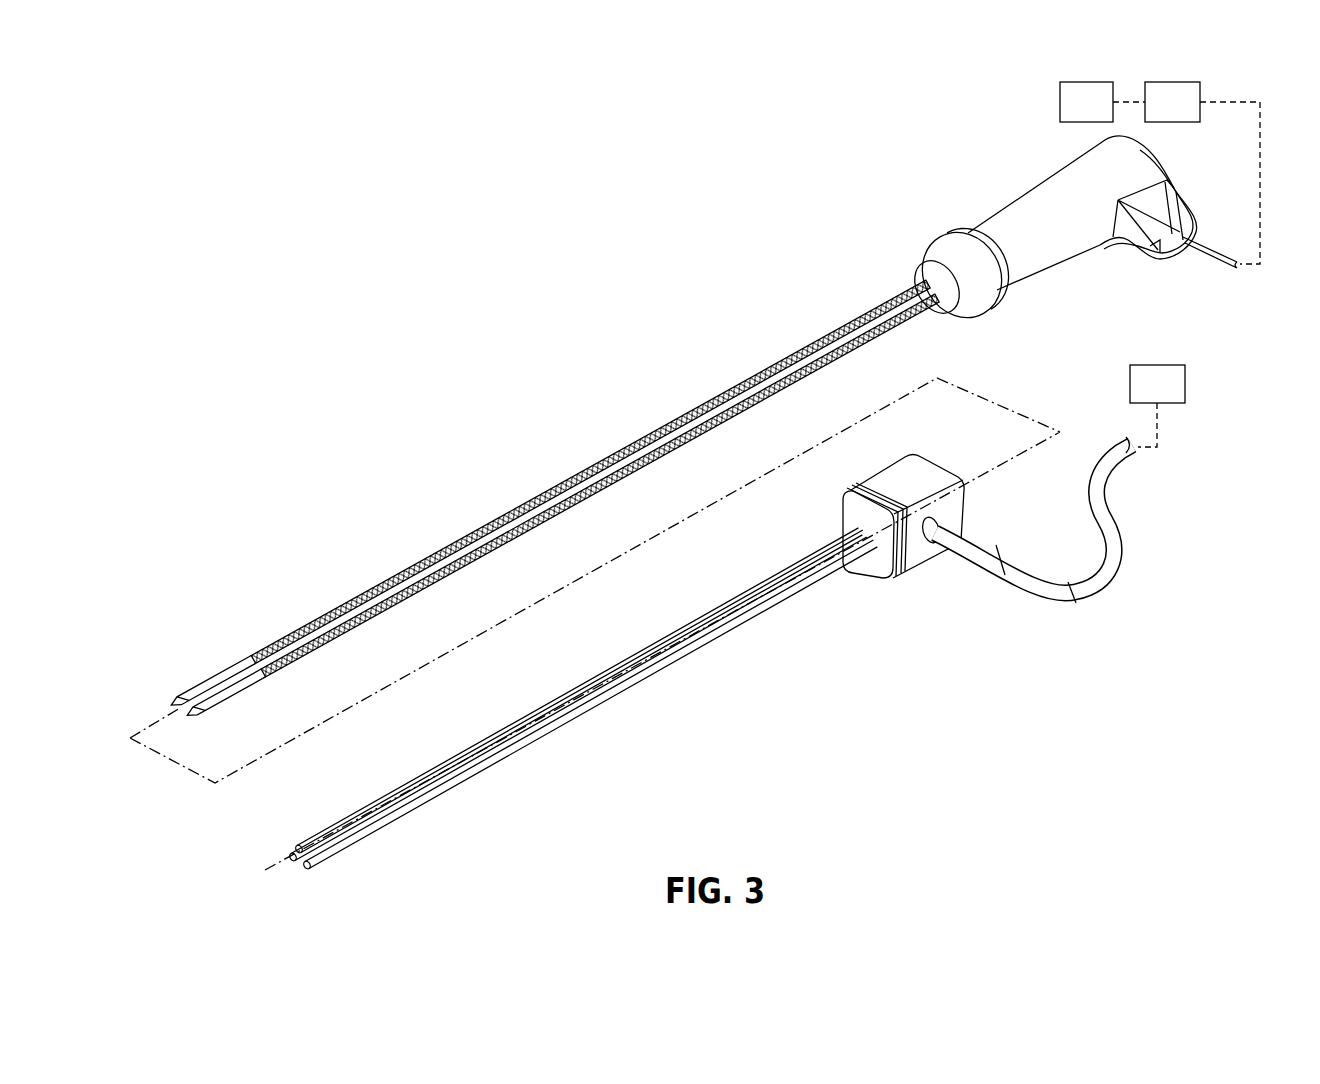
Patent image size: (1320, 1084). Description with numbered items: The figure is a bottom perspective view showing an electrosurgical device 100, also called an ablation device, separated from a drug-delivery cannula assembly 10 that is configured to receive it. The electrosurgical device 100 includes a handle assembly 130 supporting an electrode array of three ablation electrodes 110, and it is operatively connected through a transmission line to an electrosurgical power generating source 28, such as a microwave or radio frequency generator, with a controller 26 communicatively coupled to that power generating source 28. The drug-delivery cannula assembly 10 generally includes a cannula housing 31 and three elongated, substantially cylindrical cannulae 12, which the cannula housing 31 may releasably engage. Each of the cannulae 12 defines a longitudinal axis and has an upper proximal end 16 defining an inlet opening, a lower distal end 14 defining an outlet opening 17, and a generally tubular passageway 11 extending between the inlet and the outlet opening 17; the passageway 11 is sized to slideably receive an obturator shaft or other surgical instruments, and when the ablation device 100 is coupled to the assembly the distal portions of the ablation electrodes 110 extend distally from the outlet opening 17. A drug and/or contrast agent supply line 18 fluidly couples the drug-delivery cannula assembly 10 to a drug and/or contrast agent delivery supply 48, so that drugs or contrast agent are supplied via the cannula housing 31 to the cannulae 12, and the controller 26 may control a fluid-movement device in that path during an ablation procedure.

The drug-delivery cannula assembly 10 is at (676, 653).
The passageway 11 is at (547, 699).
The cannulae 12 is at (653, 646).
The lower (distal) end 14 is at (305, 845).
The upper (proximal) end 16 is at (860, 554).
The outlet opening 17 is at (287, 848).
The drug and/or contrast agent supply line 18 is at (1110, 594).
The controller 26 is at (1086, 102).
The electrosurgical power generating source 28 is at (1172, 102).
The cannula housing 31 is at (909, 542).
The drug and/or contrast agent delivery supply 48 is at (1157, 384).
The electrosurgical device 100 is at (703, 443).
The ablation electrodes 110 is at (554, 499).
The handle assembly 130 is at (1072, 282).